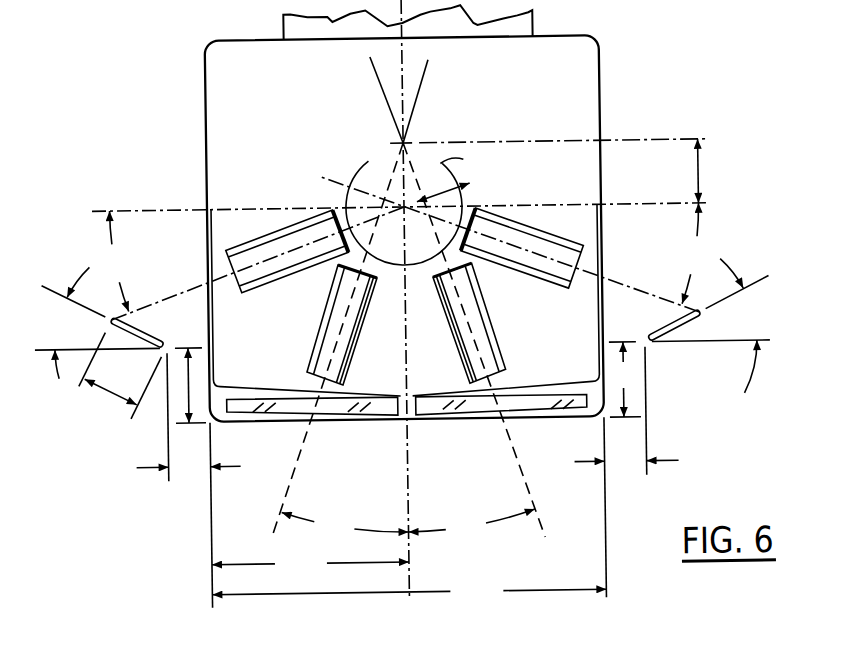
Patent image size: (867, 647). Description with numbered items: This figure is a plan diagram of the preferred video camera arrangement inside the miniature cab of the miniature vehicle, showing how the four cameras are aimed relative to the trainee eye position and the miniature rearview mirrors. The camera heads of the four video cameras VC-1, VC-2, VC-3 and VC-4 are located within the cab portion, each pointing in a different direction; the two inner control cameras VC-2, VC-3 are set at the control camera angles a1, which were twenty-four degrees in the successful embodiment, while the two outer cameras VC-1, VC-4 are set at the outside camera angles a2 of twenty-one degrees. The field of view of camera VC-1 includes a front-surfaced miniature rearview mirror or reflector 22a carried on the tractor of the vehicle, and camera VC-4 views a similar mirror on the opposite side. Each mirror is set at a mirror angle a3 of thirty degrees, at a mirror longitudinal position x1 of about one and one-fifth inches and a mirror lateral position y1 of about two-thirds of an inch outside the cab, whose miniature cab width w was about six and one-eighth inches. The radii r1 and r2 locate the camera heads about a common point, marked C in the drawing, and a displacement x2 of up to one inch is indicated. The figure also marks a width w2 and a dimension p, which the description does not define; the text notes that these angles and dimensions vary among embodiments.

The video camera VC-1 is at (551, 285).
The video camera VC-2 is at (496, 336).
The video camera VC-3 is at (358, 339).
The video camera VC-4 is at (300, 270).
The rearview mirror 22a is at (668, 344).
The center point C is at (404, 208).
The radius r1 is at (453, 177).
The radius r2 is at (386, 173).
The mirror longitudinal position x1 is at (408, 382).
The displacement x2 is at (712, 170).
The mirror lateral position y1 is at (407, 466).
The miniature cab width w is at (409, 590).
The width w2 is at (310, 562).
The flap length p is at (120, 376).
The control camera angle a1 is at (409, 523).
The outside camera angle a2 is at (406, 257).
The mirror angle a3 is at (405, 330).